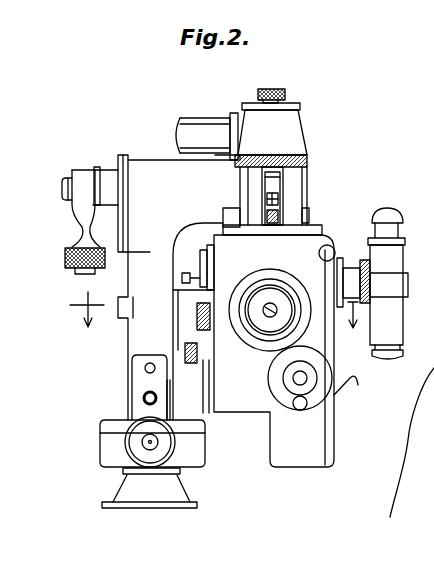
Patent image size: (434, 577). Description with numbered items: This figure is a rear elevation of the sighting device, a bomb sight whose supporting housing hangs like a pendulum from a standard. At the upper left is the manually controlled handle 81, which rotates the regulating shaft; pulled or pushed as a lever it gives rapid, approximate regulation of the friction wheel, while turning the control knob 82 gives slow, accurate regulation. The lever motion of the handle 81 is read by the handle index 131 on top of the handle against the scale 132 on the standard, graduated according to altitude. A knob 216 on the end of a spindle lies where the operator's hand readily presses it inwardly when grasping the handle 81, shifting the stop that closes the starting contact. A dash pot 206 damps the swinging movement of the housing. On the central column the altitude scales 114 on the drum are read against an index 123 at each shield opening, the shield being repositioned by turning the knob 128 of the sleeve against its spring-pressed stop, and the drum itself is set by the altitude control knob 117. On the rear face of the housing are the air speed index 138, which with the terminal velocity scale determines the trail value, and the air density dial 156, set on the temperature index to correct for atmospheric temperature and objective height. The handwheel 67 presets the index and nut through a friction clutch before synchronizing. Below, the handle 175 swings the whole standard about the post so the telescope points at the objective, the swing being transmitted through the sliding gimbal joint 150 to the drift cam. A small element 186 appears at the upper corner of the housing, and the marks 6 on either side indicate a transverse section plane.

The section line 6- 6 is at (217, 318).
The handwheel 67 is at (298, 409).
The handle 81 is at (78, 231).
The control knob 82 is at (64, 272).
The altitude scales 114 is at (278, 198).
The altitude control knob 117 is at (193, 226).
The index 123 is at (303, 178).
The knob 128 is at (306, 158).
The handle index 131 is at (88, 167).
The scale 132 is at (100, 167).
The air speed index 138 is at (285, 288).
The sliding gimbal joint 150 is at (196, 312).
The air density dial 156 is at (204, 333).
The handle 175 is at (170, 453).
The pivot pin 186 is at (334, 250).
The dash pot 206 is at (203, 100).
The knob 216 is at (64, 188).